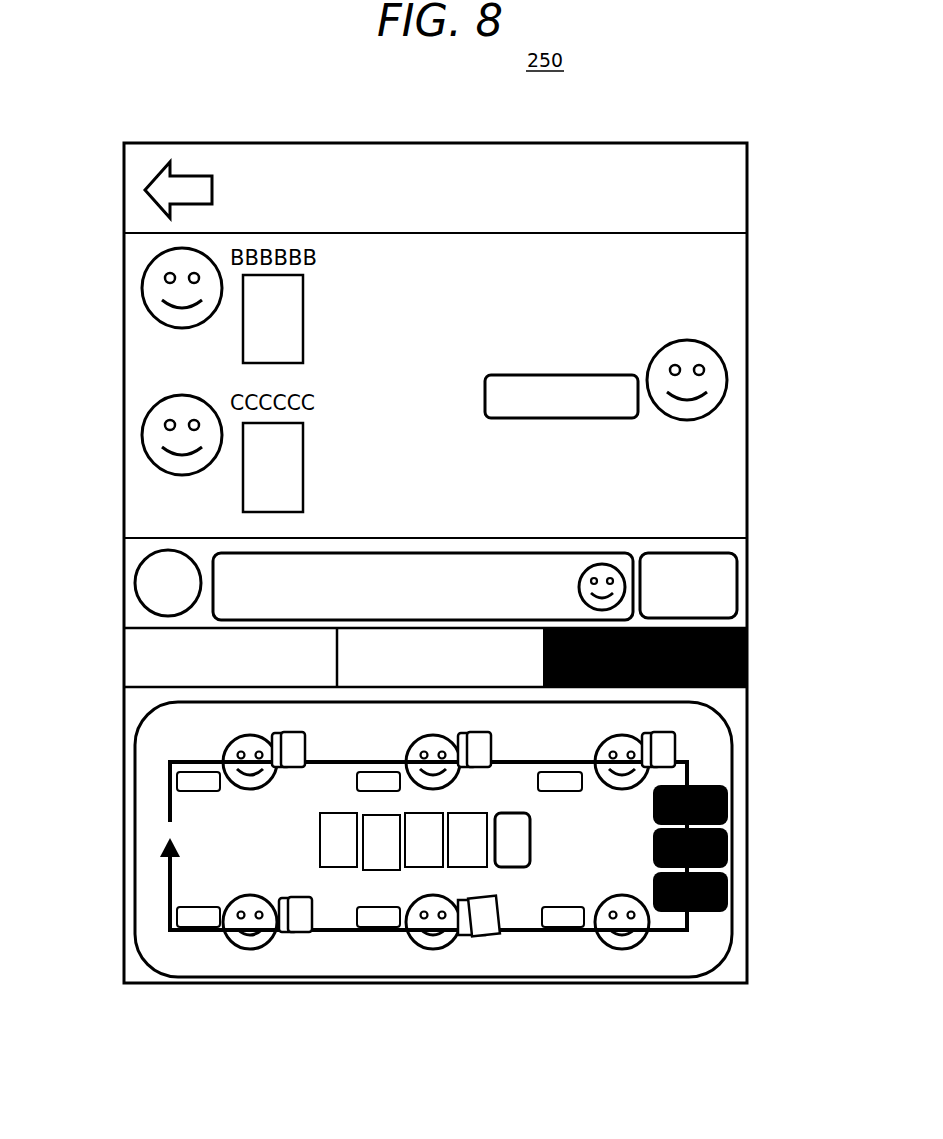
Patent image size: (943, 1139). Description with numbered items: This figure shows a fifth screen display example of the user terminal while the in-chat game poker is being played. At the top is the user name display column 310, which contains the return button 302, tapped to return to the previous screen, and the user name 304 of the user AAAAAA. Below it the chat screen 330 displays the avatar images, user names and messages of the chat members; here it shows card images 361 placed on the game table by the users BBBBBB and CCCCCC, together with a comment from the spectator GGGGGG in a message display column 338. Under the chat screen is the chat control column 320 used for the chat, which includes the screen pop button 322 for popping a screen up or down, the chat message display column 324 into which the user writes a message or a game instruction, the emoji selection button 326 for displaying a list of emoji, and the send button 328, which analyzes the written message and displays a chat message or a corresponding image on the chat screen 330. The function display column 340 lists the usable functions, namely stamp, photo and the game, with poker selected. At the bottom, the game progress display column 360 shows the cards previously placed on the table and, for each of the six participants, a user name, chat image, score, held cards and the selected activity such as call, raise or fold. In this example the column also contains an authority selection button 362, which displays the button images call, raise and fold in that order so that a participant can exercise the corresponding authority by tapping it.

The return button 302 is at (212, 170).
The user name 304 is at (515, 165).
The user name display column 310 is at (733, 192).
The chat control column 320 is at (715, 550).
The screen pop button 322 is at (168, 555).
The chat message display column 324 is at (418, 568).
The emoji selection button 326 is at (602, 563).
The send button 328 is at (725, 608).
The chat screen 330 is at (735, 358).
The message display column 338 is at (499, 377).
The function display column 340 is at (135, 668).
The game progress display column 360 is at (145, 743).
The card images 361 is at (301, 330).
The authority selection button 362 is at (730, 790).